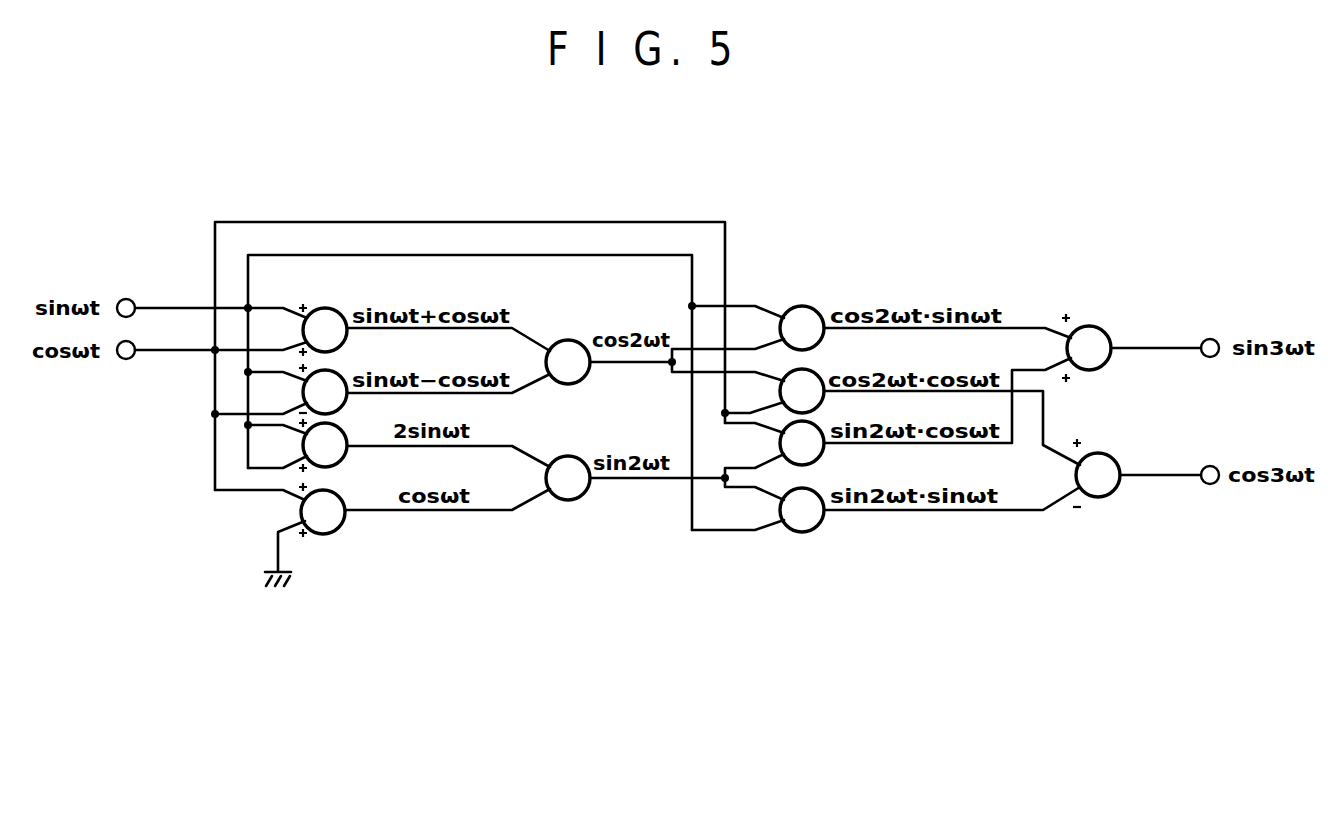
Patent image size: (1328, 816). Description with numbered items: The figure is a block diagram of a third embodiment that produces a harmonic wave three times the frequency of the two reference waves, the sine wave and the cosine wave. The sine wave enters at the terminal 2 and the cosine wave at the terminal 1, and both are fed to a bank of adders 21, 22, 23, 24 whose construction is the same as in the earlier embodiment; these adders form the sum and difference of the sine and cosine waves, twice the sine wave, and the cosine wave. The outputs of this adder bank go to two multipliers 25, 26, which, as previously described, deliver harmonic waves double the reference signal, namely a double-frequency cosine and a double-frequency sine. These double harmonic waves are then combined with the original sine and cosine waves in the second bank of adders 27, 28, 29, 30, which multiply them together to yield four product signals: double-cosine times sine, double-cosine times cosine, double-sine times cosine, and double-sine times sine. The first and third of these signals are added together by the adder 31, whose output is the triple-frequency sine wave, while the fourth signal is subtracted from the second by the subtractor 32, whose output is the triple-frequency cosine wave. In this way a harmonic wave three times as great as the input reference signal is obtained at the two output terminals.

The cos ωt input terminal 1 is at (126, 359).
The sin ωt input terminal 2 is at (126, 299).
The adder 21 is at (338, 310).
The adder 22 is at (342, 378).
The adder 23 is at (343, 429).
The adder 24 is at (340, 496).
The multiplier 25 is at (573, 341).
The multiplier 26 is at (570, 457).
The adder 27 is at (806, 307).
The adder 28 is at (820, 372).
The adder 29 is at (820, 425).
The adder 30 is at (818, 490).
The adder 31 is at (1099, 327).
The subtractor 32 is at (1106, 453).